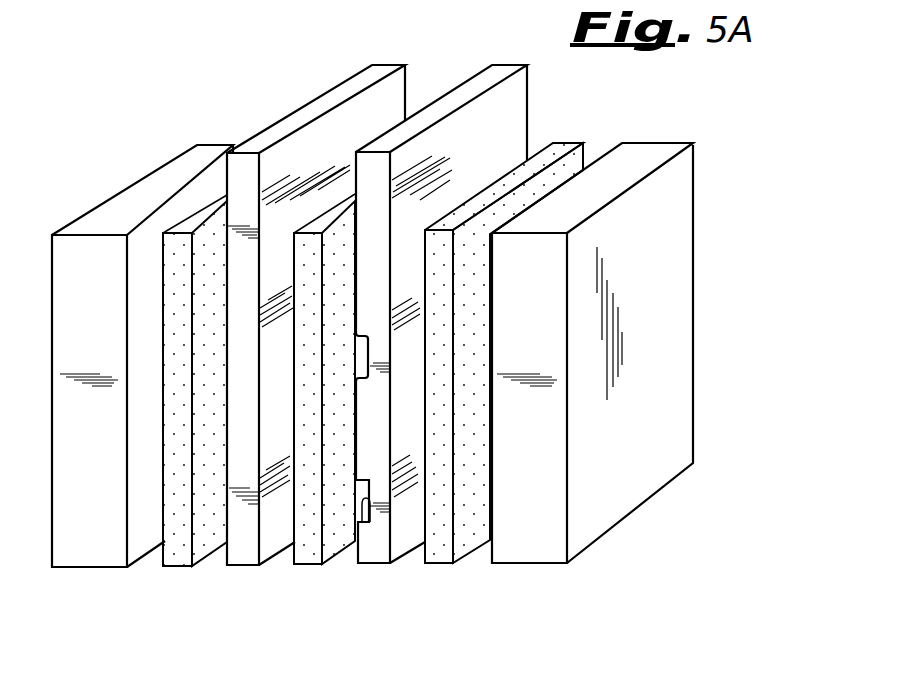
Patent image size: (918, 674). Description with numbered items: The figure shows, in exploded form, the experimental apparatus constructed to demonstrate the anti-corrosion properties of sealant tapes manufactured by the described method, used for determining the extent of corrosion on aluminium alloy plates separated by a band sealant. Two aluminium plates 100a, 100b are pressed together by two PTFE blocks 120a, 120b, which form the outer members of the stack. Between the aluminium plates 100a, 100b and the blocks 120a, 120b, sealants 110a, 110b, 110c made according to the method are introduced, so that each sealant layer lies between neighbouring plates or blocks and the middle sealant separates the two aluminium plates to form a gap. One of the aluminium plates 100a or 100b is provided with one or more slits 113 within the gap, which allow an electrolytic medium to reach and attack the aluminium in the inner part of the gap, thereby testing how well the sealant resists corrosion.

The aluminium plate 100a is at (313, 112).
The aluminium plate 100b is at (485, 80).
The sealant 110a is at (177, 558).
The sealant 110b is at (308, 567).
The sealant 110c is at (433, 555).
The slit 113 is at (358, 523).
The PTFE block 120a is at (88, 557).
The PTFE block 120b is at (527, 550).